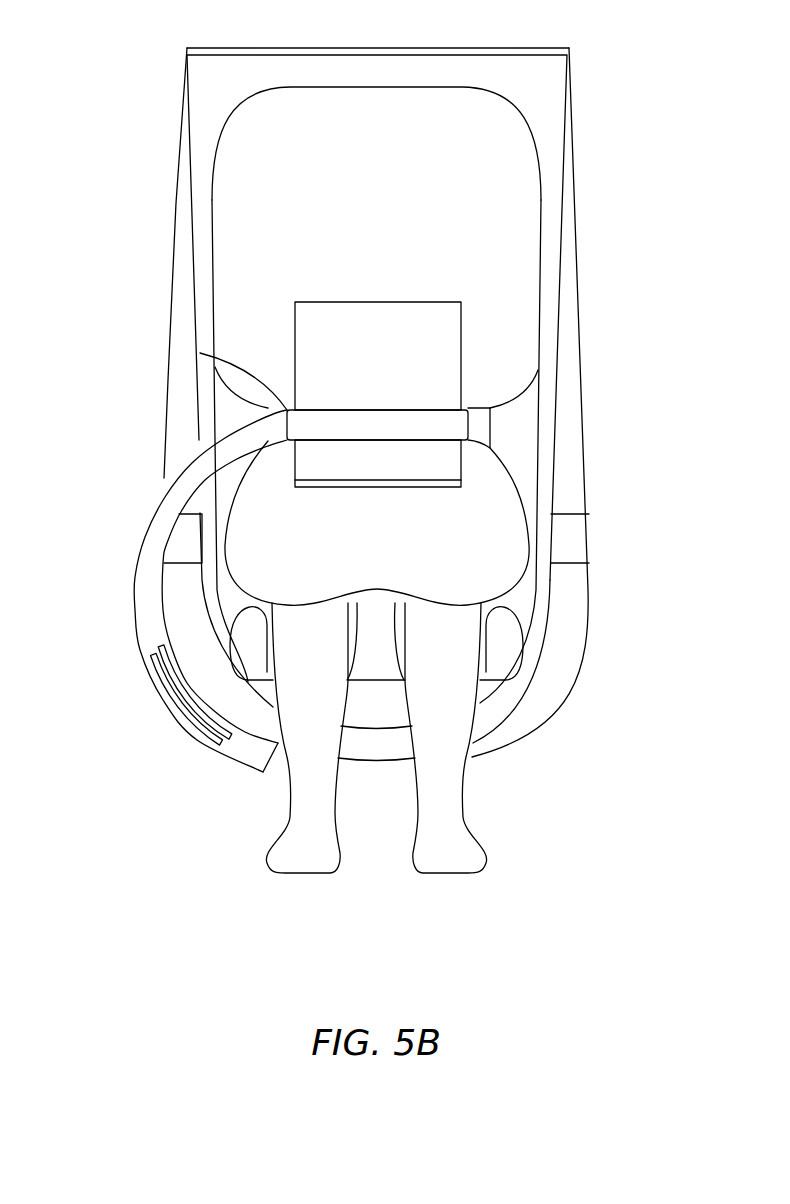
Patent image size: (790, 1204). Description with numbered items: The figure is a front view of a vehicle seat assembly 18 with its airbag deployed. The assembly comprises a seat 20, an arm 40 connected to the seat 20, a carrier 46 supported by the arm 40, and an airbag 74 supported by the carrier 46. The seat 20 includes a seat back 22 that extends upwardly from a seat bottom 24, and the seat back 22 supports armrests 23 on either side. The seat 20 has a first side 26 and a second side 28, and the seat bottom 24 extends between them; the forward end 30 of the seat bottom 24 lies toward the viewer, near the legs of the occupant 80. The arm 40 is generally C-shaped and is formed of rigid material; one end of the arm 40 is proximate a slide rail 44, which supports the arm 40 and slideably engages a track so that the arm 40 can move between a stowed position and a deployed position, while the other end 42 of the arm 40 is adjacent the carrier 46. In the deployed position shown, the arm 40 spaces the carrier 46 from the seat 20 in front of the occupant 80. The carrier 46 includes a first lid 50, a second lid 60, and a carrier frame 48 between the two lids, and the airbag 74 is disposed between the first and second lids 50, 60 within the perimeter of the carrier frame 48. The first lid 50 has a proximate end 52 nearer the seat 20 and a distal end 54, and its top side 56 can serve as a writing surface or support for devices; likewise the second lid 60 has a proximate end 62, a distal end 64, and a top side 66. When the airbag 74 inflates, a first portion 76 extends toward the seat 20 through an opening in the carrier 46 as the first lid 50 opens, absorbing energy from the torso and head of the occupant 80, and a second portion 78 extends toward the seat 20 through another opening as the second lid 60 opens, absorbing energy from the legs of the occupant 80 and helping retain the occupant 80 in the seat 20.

The vehicle seat assembly 18 is at (673, 87).
The seat 20 is at (157, 302).
The seat back 22 is at (177, 207).
The armrests 23 is at (190, 511).
The seat bottom 24 is at (536, 712).
The first side 26 is at (166, 620).
The second side 28 is at (589, 632).
The forward end 30 is at (381, 706).
The arm 40 is at (133, 578).
The end of the arm 42 is at (200, 353).
The slide rail 44 is at (180, 717).
The carrier 46 is at (500, 420).
The carrier frame 48 is at (285, 427).
The first lid 50 is at (290, 349).
The proximate end of the first lid 52 is at (445, 301).
The distal end of the first lid 54 is at (463, 408).
The top side of the first lid 56 is at (369, 365).
The second lid 60 is at (467, 472).
The proximate end of the second lid 62 is at (452, 489).
The distal end of the second lid 64 is at (292, 443).
The top side of the second lid 66 is at (369, 473).
The airbag 74 is at (489, 90).
The first portion of the airbag 76 is at (369, 210).
The second portion of the airbag 78 is at (369, 552).
The occupant 80 is at (369, 622).